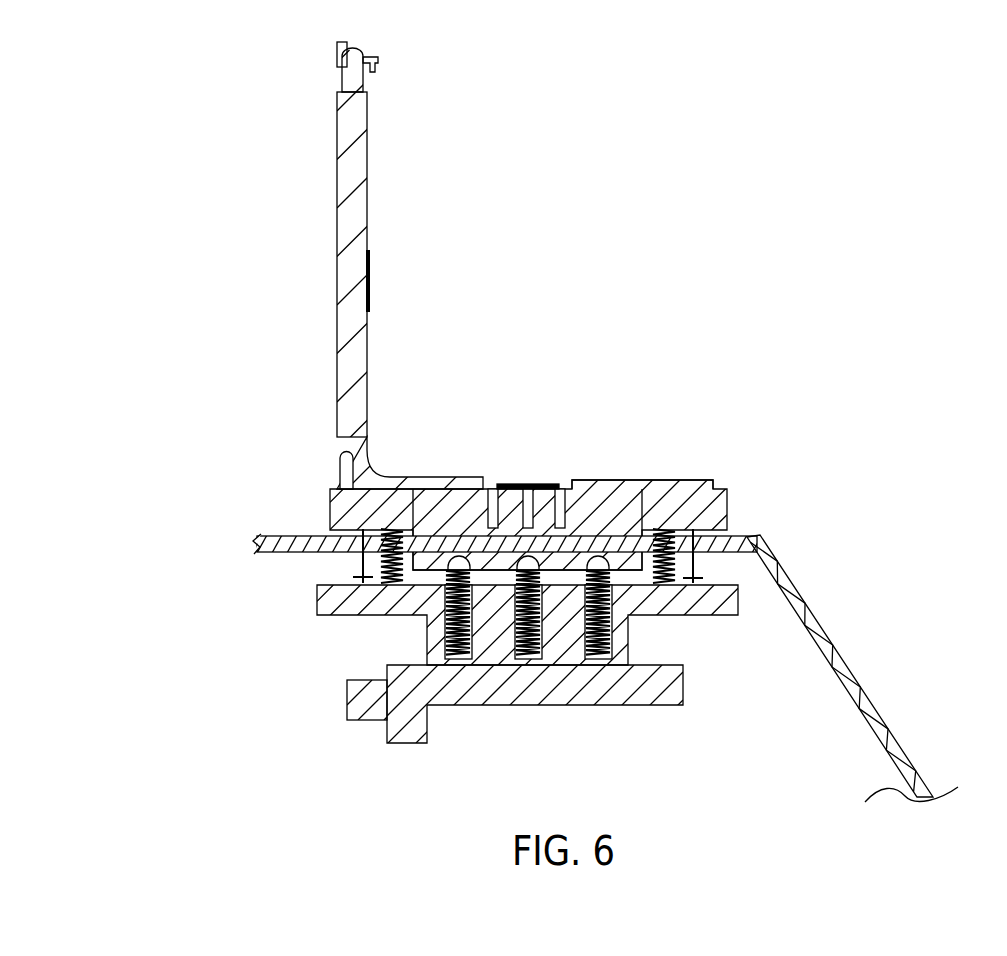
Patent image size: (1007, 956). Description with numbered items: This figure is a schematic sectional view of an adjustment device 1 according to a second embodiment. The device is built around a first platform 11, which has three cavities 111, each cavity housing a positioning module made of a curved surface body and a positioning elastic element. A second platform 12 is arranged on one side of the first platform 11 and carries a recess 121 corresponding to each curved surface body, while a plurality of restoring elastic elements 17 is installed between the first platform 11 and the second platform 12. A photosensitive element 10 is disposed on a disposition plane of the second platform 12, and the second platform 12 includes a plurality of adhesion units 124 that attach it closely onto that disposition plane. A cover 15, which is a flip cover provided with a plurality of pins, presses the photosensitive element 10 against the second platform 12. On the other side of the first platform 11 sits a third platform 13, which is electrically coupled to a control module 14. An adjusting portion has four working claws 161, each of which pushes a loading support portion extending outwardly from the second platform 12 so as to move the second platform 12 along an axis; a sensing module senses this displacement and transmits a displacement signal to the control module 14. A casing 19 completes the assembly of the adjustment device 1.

The adjustment device 1 is at (249, 96).
The photosensitive element 10 is at (493, 487).
The first platform 11 is at (717, 603).
The second platform 12 is at (622, 500).
The third platform 13 is at (625, 693).
The control module 14 is at (363, 702).
The cover 15 is at (347, 187).
The restoring elastic elements 17 is at (360, 568).
The casing 19 is at (857, 702).
The cavities 111 is at (445, 640).
The recess 121 is at (703, 505).
The adhesion units 124 is at (495, 508).
The working claws 161 is at (708, 550).